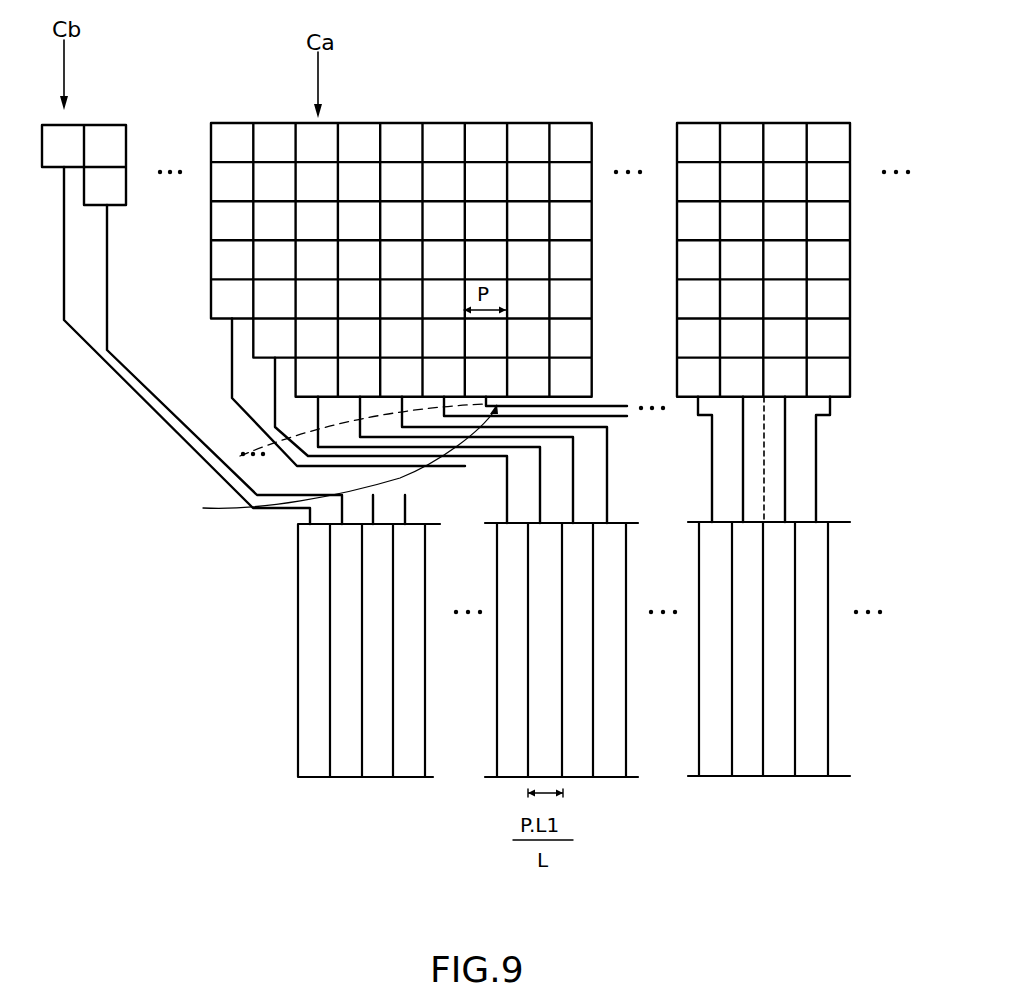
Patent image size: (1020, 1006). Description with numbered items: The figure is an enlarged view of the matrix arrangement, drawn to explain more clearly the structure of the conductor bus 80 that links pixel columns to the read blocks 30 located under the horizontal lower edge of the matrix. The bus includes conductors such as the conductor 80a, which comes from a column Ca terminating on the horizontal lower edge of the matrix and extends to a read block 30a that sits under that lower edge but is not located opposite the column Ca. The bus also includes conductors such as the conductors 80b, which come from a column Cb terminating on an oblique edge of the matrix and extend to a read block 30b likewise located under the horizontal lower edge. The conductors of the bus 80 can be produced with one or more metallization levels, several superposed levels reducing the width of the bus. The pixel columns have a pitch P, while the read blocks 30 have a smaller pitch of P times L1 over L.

The read block 30 is at (506, 684).
The read block 30a is at (542, 743).
The read block 30b is at (313, 760).
The conductor bus 80 is at (345, 346).
The conductor 80a is at (300, 425).
The conductor 80b is at (192, 460).